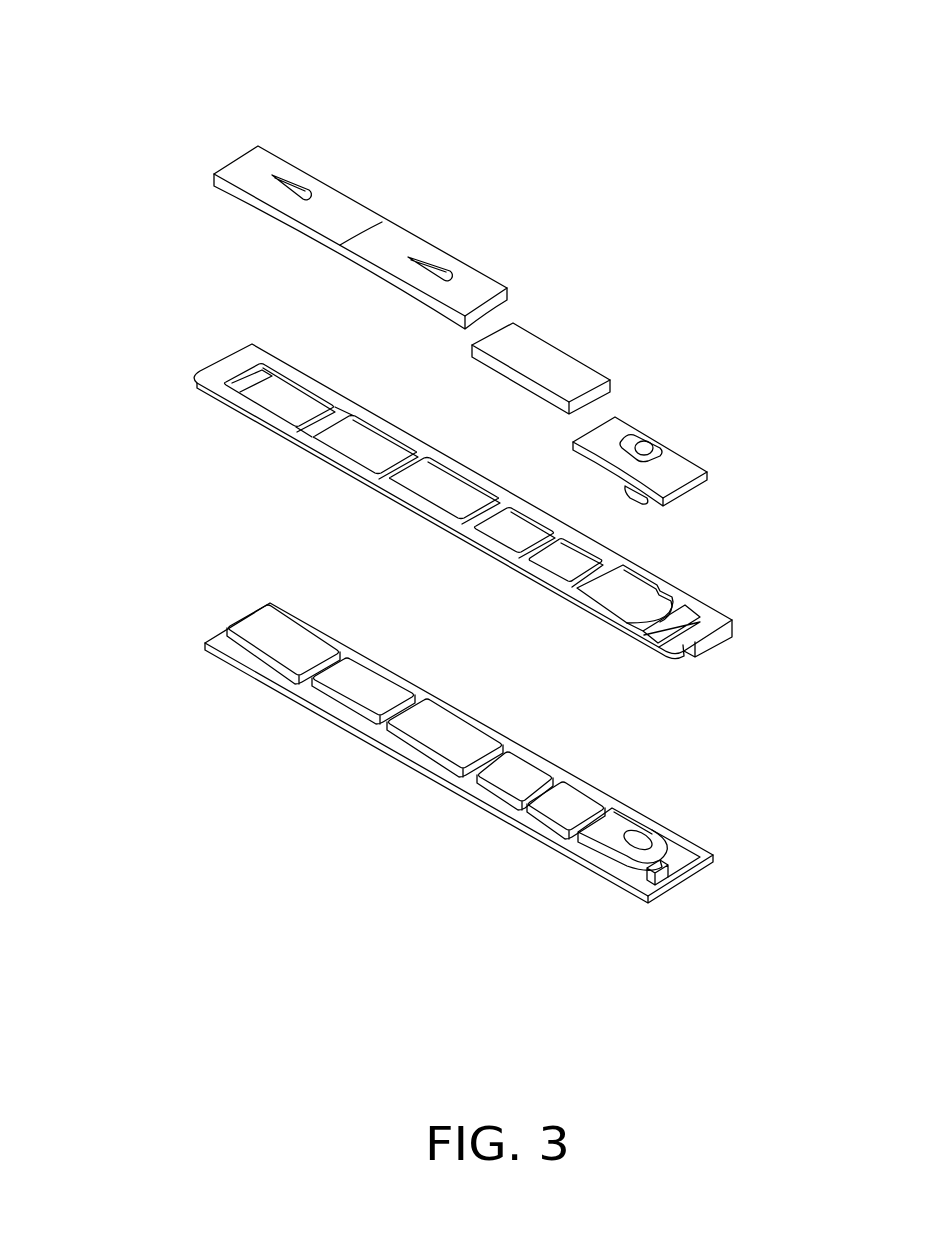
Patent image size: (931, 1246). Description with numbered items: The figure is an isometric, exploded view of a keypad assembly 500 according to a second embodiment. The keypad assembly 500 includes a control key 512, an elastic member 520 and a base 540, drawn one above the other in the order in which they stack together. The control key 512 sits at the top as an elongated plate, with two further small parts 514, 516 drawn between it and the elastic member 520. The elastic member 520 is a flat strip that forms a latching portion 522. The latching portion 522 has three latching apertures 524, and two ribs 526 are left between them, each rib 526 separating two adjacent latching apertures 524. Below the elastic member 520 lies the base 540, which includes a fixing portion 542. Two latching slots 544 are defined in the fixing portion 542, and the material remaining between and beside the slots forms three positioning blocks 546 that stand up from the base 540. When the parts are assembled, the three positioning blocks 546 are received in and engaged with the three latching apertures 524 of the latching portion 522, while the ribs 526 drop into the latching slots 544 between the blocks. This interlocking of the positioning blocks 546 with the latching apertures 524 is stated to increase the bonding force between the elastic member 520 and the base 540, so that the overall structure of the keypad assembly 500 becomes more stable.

The keypad assembly 500 is at (497, 42).
The control key 512 is at (340, 200).
The key block 514 is at (550, 358).
The key cap with post 516 is at (677, 468).
The elastic member 520 is at (425, 478).
The latching portion 522 is at (397, 478).
The latching apertures 524 is at (282, 385).
The ribs 526 is at (308, 426).
The base 540 is at (421, 735).
The fixing portion 542 is at (389, 735).
The latching slots 544 is at (337, 663).
The positioning blocks 546 is at (290, 630).